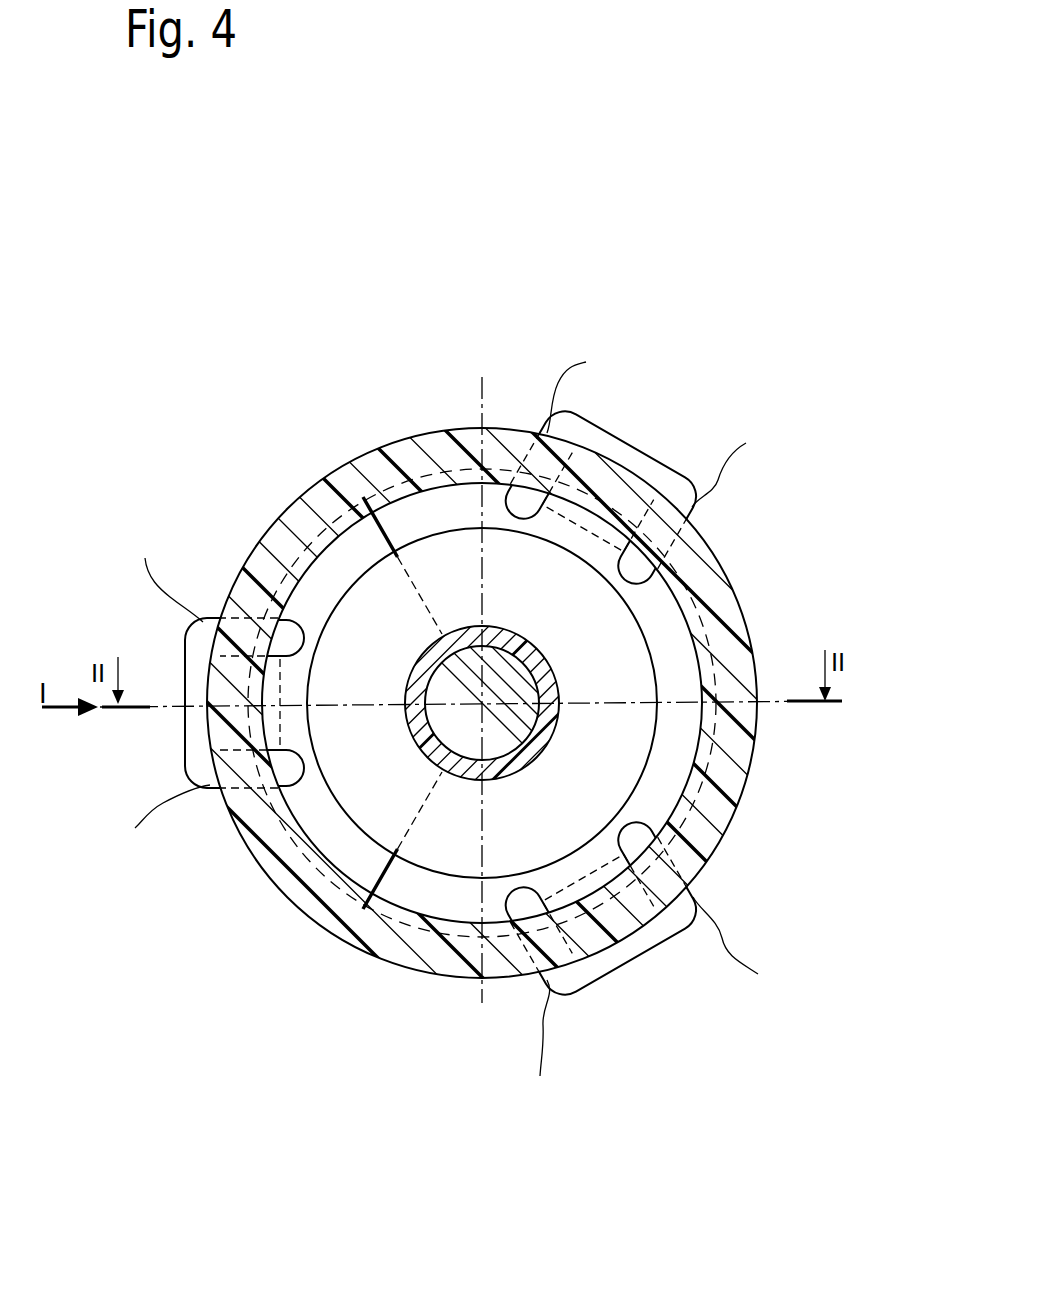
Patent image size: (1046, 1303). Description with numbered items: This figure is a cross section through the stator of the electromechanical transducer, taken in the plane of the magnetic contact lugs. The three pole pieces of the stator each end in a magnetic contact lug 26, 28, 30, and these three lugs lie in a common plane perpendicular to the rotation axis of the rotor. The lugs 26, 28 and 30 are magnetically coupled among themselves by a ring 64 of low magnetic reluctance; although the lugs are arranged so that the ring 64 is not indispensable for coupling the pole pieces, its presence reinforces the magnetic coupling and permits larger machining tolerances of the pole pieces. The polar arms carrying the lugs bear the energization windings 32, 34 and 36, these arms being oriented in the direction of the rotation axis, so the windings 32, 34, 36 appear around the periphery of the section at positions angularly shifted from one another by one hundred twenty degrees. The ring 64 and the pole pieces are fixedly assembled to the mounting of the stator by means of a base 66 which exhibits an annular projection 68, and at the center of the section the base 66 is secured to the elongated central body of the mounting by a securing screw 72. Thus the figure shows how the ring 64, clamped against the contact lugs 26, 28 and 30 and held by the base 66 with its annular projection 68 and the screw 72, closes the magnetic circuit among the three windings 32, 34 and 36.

The magnetic contact lug 26 is at (448, 900).
The magnetic contact lug 28 is at (308, 583).
The magnetic contact lug 30 is at (667, 596).
The energization winding 32 is at (607, 950).
The energization winding 34 is at (192, 742).
The energization winding 36 is at (610, 450).
The ring 64 is at (370, 787).
The base 66 is at (438, 452).
The annular projection 68 is at (356, 444).
The securing screw 72 is at (513, 720).